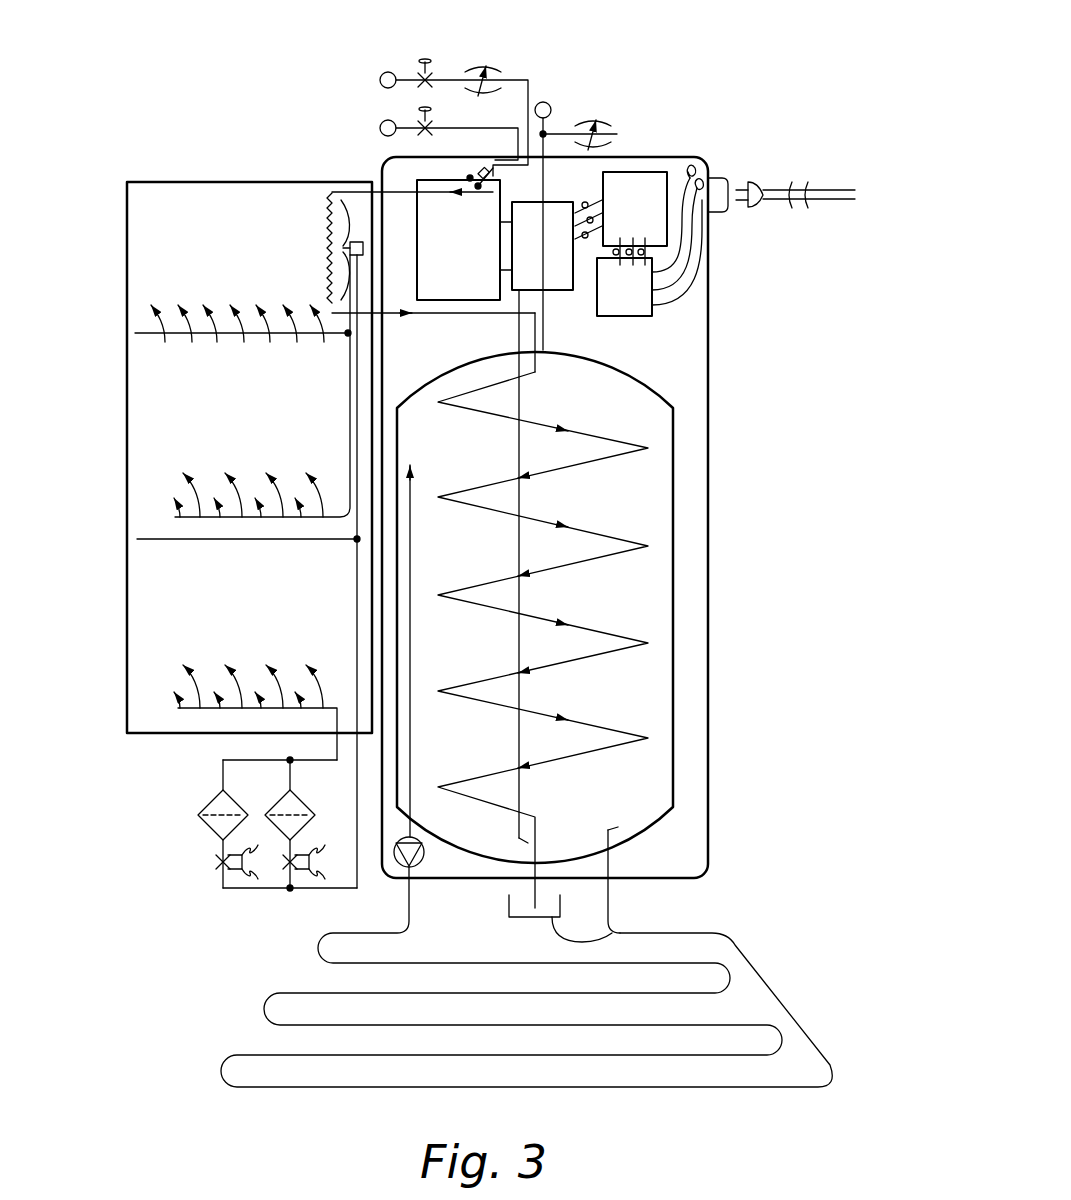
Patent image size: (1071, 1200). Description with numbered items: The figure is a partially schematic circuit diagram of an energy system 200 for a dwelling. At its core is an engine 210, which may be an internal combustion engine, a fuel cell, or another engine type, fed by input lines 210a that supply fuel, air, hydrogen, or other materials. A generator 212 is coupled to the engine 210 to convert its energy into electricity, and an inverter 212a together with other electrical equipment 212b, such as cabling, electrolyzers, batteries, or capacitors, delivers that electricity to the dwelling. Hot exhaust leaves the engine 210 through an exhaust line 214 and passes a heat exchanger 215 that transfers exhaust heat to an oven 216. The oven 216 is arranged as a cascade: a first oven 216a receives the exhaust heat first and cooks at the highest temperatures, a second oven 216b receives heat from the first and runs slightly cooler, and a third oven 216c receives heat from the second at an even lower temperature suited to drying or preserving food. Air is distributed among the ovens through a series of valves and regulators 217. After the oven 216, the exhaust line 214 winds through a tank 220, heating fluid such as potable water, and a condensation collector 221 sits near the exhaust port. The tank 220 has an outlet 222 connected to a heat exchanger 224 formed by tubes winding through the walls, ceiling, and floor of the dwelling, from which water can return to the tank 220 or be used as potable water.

The system 200 is at (188, 73).
The engine 210 is at (490, 203).
The input lines 210a is at (410, 77).
The generator 212 is at (560, 207).
The inverter 212a is at (645, 318).
The electrical equipment 212b is at (645, 183).
The exhaust line 214 is at (390, 170).
The heat exchanger 215 is at (330, 210).
The oven 216 is at (125, 199).
The first oven 216a is at (152, 248).
The second oven 216b is at (150, 448).
The third oven 216c is at (150, 607).
The valves and regulators 217 is at (188, 838).
The tank 220 is at (655, 500).
The condensation collector 221 is at (615, 928).
The outlet 222 is at (425, 855).
The heat exchanger 224 is at (300, 993).